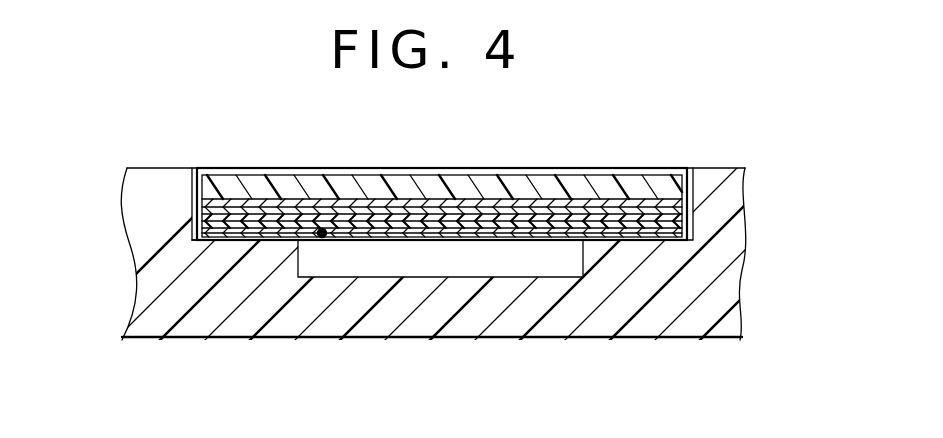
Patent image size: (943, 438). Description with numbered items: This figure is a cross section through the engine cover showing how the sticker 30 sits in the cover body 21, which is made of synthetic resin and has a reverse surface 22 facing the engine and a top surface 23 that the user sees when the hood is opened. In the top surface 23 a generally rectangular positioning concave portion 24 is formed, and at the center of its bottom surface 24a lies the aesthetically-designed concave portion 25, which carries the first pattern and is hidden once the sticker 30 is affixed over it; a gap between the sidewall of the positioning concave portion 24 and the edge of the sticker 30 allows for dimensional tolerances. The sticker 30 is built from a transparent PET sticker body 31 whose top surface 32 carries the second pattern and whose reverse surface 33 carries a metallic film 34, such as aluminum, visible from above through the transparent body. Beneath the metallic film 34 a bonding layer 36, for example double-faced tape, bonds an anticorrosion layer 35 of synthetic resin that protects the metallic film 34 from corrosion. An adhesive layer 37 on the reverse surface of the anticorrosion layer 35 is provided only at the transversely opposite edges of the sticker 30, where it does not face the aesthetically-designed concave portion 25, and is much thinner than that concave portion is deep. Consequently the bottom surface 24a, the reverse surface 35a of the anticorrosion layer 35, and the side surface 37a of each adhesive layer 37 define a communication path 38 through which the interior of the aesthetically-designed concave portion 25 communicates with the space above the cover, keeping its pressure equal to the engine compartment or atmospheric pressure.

The cover body 21 is at (193, 325).
The reverse surface 22 is at (335, 339).
The top surface 23 is at (722, 166).
The positioning concave portion 24 is at (203, 190).
The bottom surface 24a is at (257, 184).
The aesthetically-designed concave portion 25 is at (577, 263).
The sticker 30 is at (450, 229).
The sticker body 31 is at (453, 243).
The top surface 32 is at (325, 178).
The reverse surface 33 is at (360, 186).
The metallic film 34 is at (515, 203).
The anticorrosion layer 35 is at (537, 224).
The reverse surface 35a is at (470, 219).
The bonding layer 36 is at (412, 215).
The adhesive layer 37 is at (648, 236).
The side surface 37a is at (612, 234).
The communication path 38 is at (326, 236).